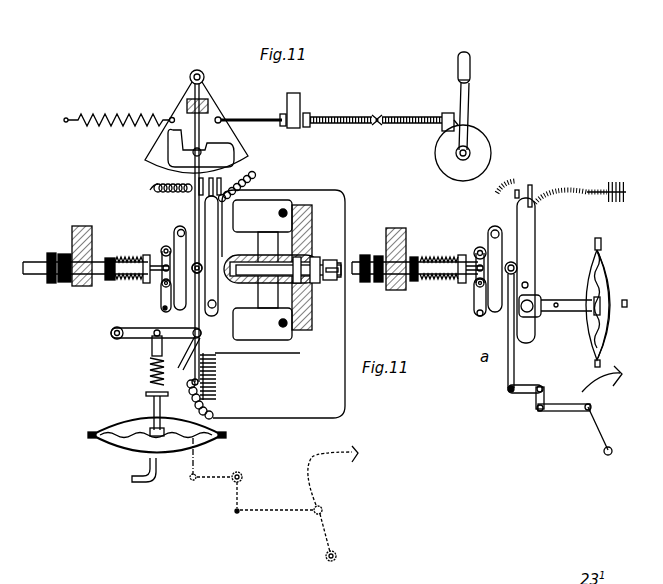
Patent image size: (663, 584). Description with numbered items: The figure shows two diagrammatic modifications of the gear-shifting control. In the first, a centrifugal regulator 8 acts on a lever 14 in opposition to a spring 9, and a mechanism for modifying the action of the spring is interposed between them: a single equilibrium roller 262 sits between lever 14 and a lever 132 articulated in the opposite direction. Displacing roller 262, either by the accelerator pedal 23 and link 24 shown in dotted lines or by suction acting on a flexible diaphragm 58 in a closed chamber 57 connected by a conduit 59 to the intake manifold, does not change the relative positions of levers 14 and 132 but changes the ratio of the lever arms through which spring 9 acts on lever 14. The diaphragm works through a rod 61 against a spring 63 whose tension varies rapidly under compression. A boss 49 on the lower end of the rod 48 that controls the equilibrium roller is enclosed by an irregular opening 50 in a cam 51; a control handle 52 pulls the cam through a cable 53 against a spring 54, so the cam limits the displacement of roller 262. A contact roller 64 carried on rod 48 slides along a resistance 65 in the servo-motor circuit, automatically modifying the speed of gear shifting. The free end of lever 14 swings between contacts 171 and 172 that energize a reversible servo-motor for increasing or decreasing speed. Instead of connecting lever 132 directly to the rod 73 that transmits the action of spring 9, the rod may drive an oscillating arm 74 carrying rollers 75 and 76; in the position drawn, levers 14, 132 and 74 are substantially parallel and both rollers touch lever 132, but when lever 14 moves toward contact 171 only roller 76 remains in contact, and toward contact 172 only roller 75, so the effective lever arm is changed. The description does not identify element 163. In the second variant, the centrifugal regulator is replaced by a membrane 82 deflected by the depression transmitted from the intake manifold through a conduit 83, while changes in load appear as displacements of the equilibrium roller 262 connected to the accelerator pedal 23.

In FIG. 11, the centrifugal regulator 8 is at (321, 197).
In FIG. 11, the spring 9 is at (127, 277).
In FIG. 11A, the spring 9 is at (432, 279).
In FIG. 11, the lever 14 is at (216, 218).
In FIG. 11A, the lever 14 is at (524, 236).
In FIG. 11, the accelerator pedal 23 is at (316, 489).
In FIG. 11A, the accelerator pedal 23 is at (582, 392).
In FIG. 11, the link 24 is at (259, 507).
In FIG. 11A, the link 24 is at (558, 411).
In FIG. 11, the rod 48 is at (195, 212).
In FIG. 11, the boss 49 is at (193, 153).
In FIG. 11, the irregular opening 50 is at (240, 150).
In FIG. 11, the cam 51 is at (218, 108).
In FIG. 11, the control handle 52 is at (484, 138).
In FIG. 11, the cable 53 is at (344, 116).
In FIG. 11, the spring 54 is at (113, 116).
In FIG. 11, the closed chamber 57 is at (127, 424).
In FIG. 11, the flexible diaphragm 58 is at (127, 437).
In FIG. 11, the conduit 59 is at (133, 480).
In FIG. 11, the rod 61 is at (138, 334).
In FIG. 11, the spring 63 is at (150, 381).
In FIG. 11, the sliding contact 64 is at (218, 398).
In FIG. 11, the resistance 65 is at (218, 378).
In FIG. 11, the rod 73 is at (96, 263).
In FIG. 11A, the rod 73 is at (407, 262).
In FIG. 11, the oscillating arm 74 is at (160, 296).
In FIG. 11A, the oscillating arm 74 is at (475, 302).
In FIG. 11, the roller 75 is at (161, 249).
In FIG. 11A, the roller 75 is at (477, 250).
In FIG. 11, the roller 76 is at (158, 287).
In FIG. 11A, the roller 76 is at (477, 285).
In FIG. 11A, the membrane 82 is at (590, 273).
In FIG. 11A, the conduit 83 is at (622, 250).
In FIG. 11, the lever 132 is at (173, 234).
In FIG. 11A, the lever 132 is at (490, 240).
In FIG. 11, the arm 163 is at (148, 359).
In FIG. 11, the contact 171 is at (155, 185).
In FIG. 11A, the contact 171 is at (520, 190).
In FIG. 11, the contact 172 is at (240, 172).
In FIG. 11A, the contact 172 is at (536, 182).
In FIG. 11, the equilibrium roller 262 is at (207, 276).
In FIG. 11A, the equilibrium roller 262 is at (517, 266).